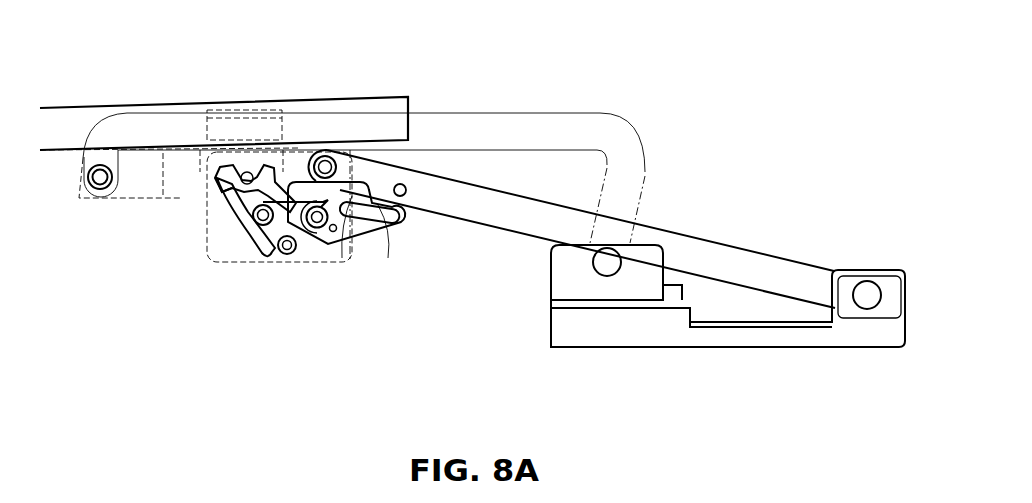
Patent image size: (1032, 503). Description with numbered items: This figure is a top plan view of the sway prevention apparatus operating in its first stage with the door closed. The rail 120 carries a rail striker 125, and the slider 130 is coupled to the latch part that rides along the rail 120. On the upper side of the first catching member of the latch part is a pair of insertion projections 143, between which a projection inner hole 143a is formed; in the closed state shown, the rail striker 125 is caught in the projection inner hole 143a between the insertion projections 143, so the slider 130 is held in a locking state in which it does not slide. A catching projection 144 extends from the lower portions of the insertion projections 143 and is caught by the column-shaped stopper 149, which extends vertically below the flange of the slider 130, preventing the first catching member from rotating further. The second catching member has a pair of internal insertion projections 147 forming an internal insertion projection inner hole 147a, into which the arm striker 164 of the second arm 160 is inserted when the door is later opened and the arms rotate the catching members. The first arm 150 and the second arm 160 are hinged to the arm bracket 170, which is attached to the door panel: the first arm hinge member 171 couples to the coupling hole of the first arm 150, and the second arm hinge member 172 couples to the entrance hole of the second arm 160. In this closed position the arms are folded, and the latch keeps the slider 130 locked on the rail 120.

The rail 120 is at (170, 103).
The rail striker 125 is at (238, 210).
The slider 130 is at (137, 191).
The insertion projections 143 is at (261, 176).
The projection inner hole 143a is at (226, 196).
The catching projection 144 is at (252, 256).
The internal insertion projections 147 is at (380, 224).
The internal insertion projection inner hole 147a is at (362, 248).
The stopper 149 is at (290, 256).
The first arm 150 is at (540, 112).
The second arm 160 is at (715, 248).
The arm striker 164 is at (404, 185).
The arm bracket 170 is at (750, 336).
The first arm hinge member 171 is at (572, 283).
The second arm hinge member 172 is at (888, 277).